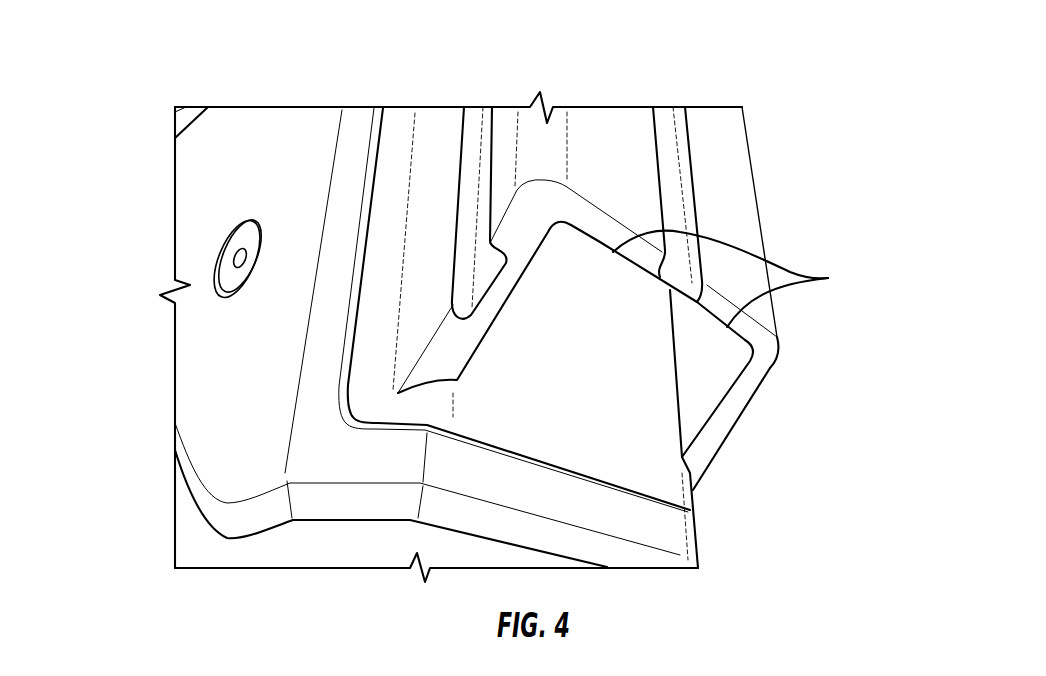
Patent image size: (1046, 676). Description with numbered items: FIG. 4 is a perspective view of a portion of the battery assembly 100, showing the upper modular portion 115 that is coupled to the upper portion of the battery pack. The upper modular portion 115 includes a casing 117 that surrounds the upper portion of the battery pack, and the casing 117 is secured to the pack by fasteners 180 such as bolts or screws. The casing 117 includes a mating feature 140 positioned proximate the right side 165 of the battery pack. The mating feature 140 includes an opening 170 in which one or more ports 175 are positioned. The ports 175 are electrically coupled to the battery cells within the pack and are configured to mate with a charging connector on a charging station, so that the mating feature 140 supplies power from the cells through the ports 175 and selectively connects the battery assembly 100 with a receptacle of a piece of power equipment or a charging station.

The battery assembly 100 is at (86, 113).
The upper modular portion 115 is at (208, 352).
The casing 117 is at (195, 422).
The mating feature 140 is at (753, 203).
The right side 165 is at (860, 374).
The opening 170 is at (736, 430).
The ports 175 is at (738, 279).
The fasteners 180 is at (235, 256).